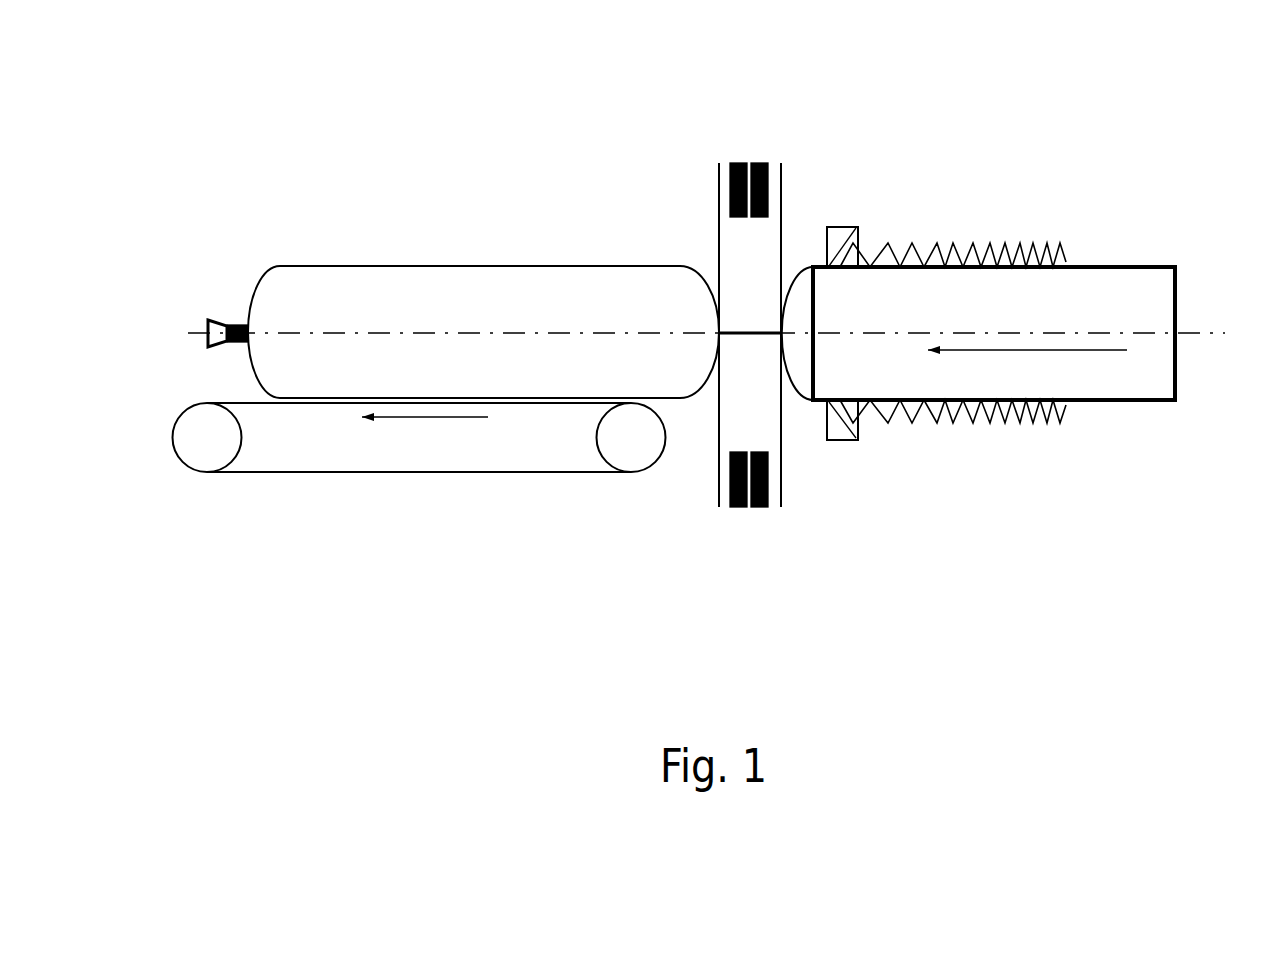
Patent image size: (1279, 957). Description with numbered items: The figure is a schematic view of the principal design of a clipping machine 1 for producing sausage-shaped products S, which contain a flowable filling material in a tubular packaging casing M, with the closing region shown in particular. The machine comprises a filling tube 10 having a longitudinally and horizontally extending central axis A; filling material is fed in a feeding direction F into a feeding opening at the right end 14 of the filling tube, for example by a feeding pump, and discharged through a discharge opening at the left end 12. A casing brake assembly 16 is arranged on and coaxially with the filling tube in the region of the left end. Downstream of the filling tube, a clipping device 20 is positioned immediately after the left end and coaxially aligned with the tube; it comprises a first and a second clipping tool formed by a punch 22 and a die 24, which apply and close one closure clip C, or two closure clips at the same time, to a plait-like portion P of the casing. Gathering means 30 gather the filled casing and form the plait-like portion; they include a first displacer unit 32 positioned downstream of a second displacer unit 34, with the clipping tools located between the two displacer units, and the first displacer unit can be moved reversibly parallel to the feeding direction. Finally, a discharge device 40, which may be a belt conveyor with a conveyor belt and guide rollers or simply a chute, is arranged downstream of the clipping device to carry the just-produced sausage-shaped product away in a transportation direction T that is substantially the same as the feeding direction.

The clipping machine 1 is at (917, 108).
The filling tube 10 is at (1105, 267).
The left end of filling tube 12 is at (817, 360).
The right end of filling tube 14 is at (1175, 297).
The casing brake assembly 16 is at (856, 228).
The clipping device 20 is at (653, 205).
The punch 22 is at (768, 190).
The die 24 is at (728, 478).
The gathering means 30 is at (873, 547).
The first displacer unit 32 is at (783, 417).
The second displacer unit 34 is at (720, 395).
The discharge device 40 is at (443, 483).
The sausage-shaped product S is at (467, 266).
The closure clip C is at (225, 323).
The plait-like portion P is at (748, 332).
The transportation direction T is at (425, 434).
The feeding direction F is at (1027, 370).
The tubular packaging casing M is at (1018, 248).
The central axis A is at (1223, 337).